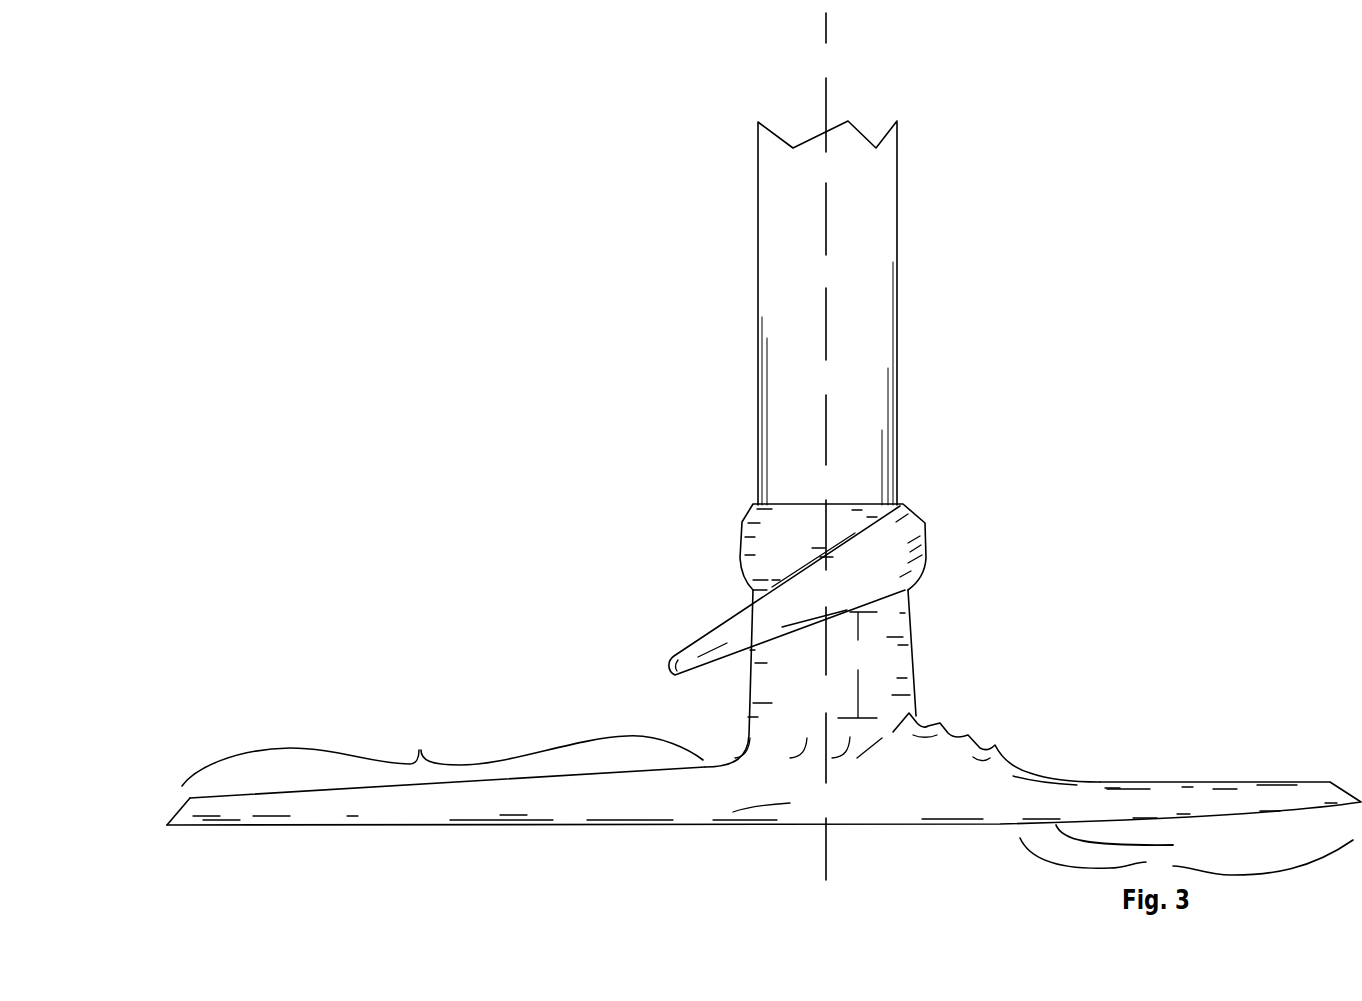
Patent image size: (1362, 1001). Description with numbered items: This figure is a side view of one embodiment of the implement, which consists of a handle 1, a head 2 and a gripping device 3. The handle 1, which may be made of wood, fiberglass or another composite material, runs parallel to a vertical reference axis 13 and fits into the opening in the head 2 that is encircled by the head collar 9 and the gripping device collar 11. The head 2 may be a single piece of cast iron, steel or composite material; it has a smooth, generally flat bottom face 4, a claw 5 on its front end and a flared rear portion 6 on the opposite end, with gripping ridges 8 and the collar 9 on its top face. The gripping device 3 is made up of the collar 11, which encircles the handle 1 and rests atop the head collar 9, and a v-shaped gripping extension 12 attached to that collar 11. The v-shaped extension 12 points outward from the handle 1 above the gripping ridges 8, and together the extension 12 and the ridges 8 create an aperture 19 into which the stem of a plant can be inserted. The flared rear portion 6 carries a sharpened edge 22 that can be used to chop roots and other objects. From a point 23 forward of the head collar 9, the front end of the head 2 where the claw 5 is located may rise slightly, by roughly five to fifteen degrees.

The handle 1 is at (897, 328).
The head 2 is at (605, 578).
The gripping device 3 is at (938, 523).
The bottom face 4 is at (736, 833).
The claw 5 is at (1186, 859).
The flared rear portion 6 is at (420, 750).
The gripping ridges 8 is at (948, 731).
The collar 9 is at (913, 646).
The collar 11 is at (739, 539).
The v-shaped gripping extension 12 is at (787, 590).
The vertical reference axis 13 is at (826, 21).
The aperture 19 is at (857, 665).
The sharpened edge 22 is at (175, 814).
The point 23 is at (1131, 841).